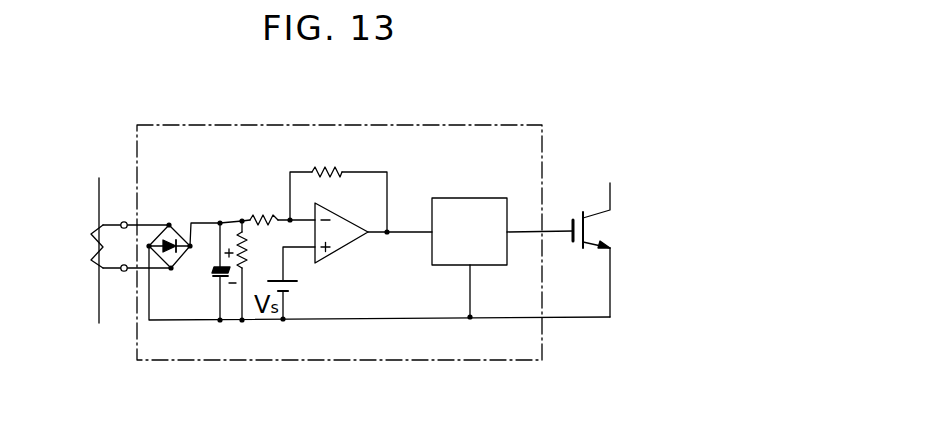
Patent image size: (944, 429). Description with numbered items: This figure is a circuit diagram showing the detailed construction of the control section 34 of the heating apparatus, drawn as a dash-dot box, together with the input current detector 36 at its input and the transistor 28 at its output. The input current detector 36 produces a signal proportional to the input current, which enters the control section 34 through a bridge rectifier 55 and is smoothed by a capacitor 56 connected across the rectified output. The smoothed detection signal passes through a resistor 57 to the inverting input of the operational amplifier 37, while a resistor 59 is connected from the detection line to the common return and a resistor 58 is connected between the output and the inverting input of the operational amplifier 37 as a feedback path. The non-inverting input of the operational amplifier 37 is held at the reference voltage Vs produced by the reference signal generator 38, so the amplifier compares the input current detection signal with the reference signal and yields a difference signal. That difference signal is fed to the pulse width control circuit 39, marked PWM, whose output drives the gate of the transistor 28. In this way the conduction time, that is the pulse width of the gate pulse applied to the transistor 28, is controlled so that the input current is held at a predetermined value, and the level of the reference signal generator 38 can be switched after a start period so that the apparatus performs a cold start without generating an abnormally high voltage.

The control section 34 is at (423, 125).
The input current detector 36 is at (90, 232).
The bridge rectifier 55 is at (174, 222).
The smoothing capacitor 56 is at (208, 272).
The input resistor 57 is at (266, 213).
The feedback resistor 58 is at (333, 167).
The resistor 59 is at (250, 263).
The operational amplifier 37 is at (347, 246).
The reference signal generator 38 is at (297, 290).
The pulse width control circuit 39 is at (488, 198).
The transistor 28 is at (607, 232).